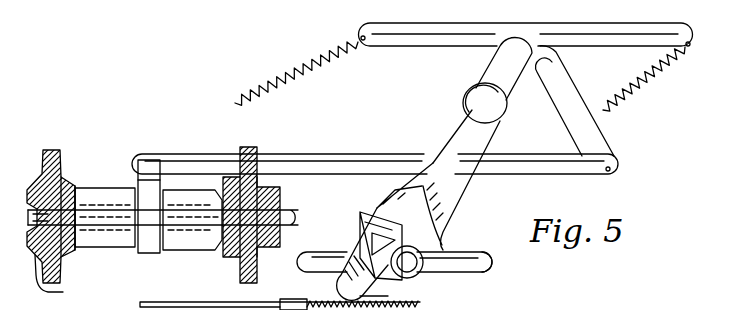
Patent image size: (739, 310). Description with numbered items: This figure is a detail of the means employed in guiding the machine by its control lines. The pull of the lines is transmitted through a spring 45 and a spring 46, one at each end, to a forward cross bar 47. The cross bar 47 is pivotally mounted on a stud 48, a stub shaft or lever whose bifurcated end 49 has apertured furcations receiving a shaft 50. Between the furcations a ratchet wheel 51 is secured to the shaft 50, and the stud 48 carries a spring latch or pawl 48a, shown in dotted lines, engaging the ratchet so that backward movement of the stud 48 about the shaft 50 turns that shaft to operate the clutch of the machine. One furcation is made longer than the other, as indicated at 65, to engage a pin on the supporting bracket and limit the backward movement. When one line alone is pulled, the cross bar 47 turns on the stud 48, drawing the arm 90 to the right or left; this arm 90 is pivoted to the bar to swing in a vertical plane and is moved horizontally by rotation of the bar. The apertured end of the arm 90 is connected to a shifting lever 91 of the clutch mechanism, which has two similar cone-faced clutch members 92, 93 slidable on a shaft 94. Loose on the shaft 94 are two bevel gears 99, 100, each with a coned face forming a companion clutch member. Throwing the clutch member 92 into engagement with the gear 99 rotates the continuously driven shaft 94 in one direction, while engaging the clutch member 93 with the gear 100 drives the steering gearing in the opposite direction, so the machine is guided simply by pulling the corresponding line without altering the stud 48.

The spring 45 is at (665, 73).
The spring 46 is at (317, 71).
The forward cross bar 47 is at (410, 37).
The stud 48 is at (463, 118).
The spring latch or pawl 48a is at (393, 192).
The bifurcated end 49 is at (427, 243).
The shaft 50 is at (492, 266).
The ratchet wheel 51 is at (373, 248).
The longer furcation end 65 is at (390, 296).
The arm 90 is at (588, 133).
The shifting lever 91 is at (327, 162).
The clutch member 92 is at (110, 190).
The clutch member 93 is at (185, 198).
The shaft 94 is at (63, 281).
The bevel gear 99 is at (55, 168).
The bevel gear 100 is at (247, 160).